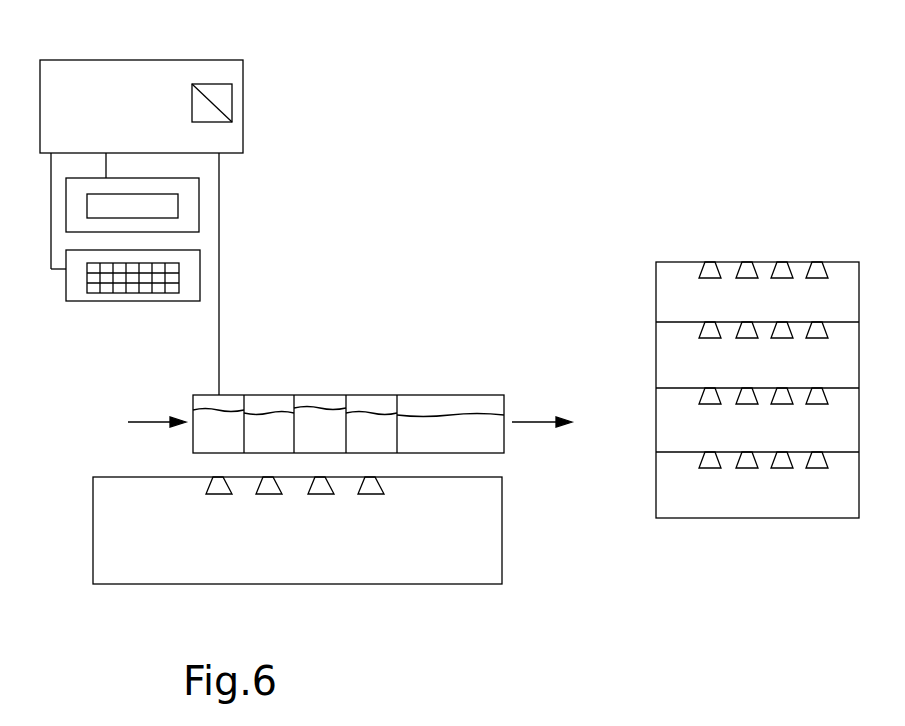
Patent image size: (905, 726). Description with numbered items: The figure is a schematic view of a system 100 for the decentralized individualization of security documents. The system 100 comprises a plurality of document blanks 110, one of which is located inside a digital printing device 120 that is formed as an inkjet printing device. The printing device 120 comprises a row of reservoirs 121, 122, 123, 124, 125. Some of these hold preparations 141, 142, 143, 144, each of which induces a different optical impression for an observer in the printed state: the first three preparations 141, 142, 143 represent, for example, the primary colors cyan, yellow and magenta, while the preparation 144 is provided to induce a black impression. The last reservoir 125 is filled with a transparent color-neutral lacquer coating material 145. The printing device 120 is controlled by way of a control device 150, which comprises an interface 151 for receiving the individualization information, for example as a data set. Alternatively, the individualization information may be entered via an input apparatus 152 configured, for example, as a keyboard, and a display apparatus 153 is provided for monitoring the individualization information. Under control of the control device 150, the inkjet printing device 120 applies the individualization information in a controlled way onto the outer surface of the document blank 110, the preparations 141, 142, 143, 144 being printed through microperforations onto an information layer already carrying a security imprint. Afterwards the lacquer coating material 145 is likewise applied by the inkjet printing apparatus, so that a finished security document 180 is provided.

The system 100 is at (538, 95).
The document blank 110 is at (488, 535).
The digital printing device 120 is at (472, 380).
The reservoir 121 is at (220, 405).
The reservoir 122 is at (276, 403).
The reservoir 123 is at (313, 393).
The reservoir 124 is at (378, 393).
The last reservoir 125 is at (454, 393).
The preparation 141 is at (193, 441).
The preparation 142 is at (250, 422).
The preparation 143 is at (325, 407).
The preparation 144 is at (378, 417).
The lacquer coating material 145 is at (460, 423).
The control device 150 is at (150, 72).
The interface 151 is at (222, 95).
The input apparatus 152 is at (95, 292).
The display apparatus 153 is at (184, 199).
The security document 180 is at (62, 569).